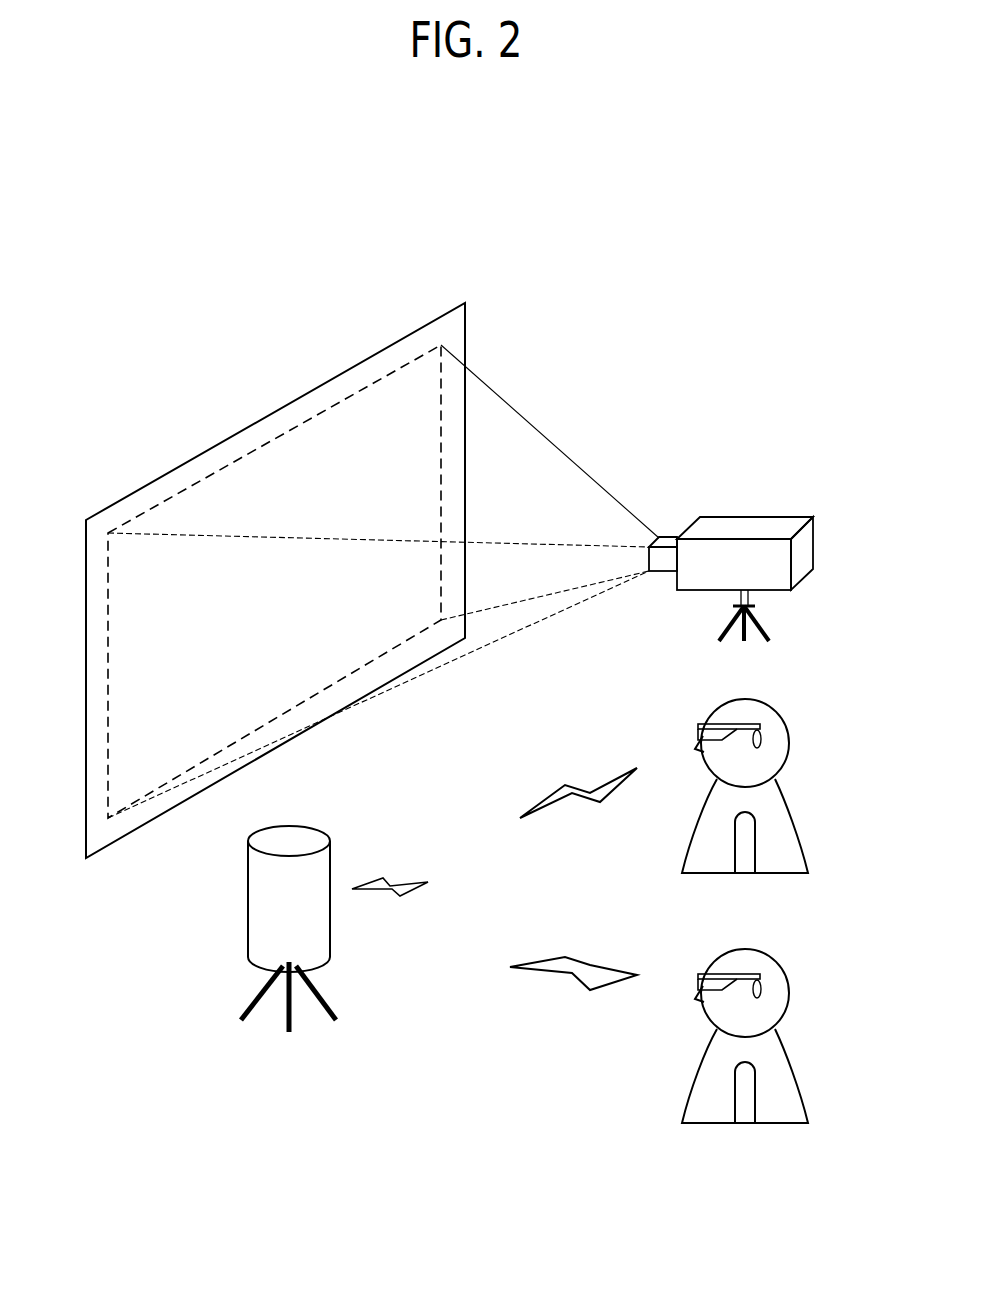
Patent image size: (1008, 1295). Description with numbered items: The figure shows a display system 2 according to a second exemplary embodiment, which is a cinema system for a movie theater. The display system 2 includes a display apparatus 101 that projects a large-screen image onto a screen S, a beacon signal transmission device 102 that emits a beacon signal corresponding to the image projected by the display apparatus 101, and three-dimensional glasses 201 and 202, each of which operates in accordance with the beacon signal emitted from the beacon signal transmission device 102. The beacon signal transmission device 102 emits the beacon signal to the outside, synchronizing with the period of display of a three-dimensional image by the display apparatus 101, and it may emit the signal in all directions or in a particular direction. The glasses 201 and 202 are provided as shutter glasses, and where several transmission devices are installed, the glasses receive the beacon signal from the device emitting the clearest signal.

The display system 2 is at (666, 288).
The screen S is at (196, 458).
The display apparatus 101 is at (765, 520).
The beacon signal transmission device 102 is at (257, 932).
The 3D glasses 201 is at (760, 724).
The 3D glasses 202 is at (760, 974).